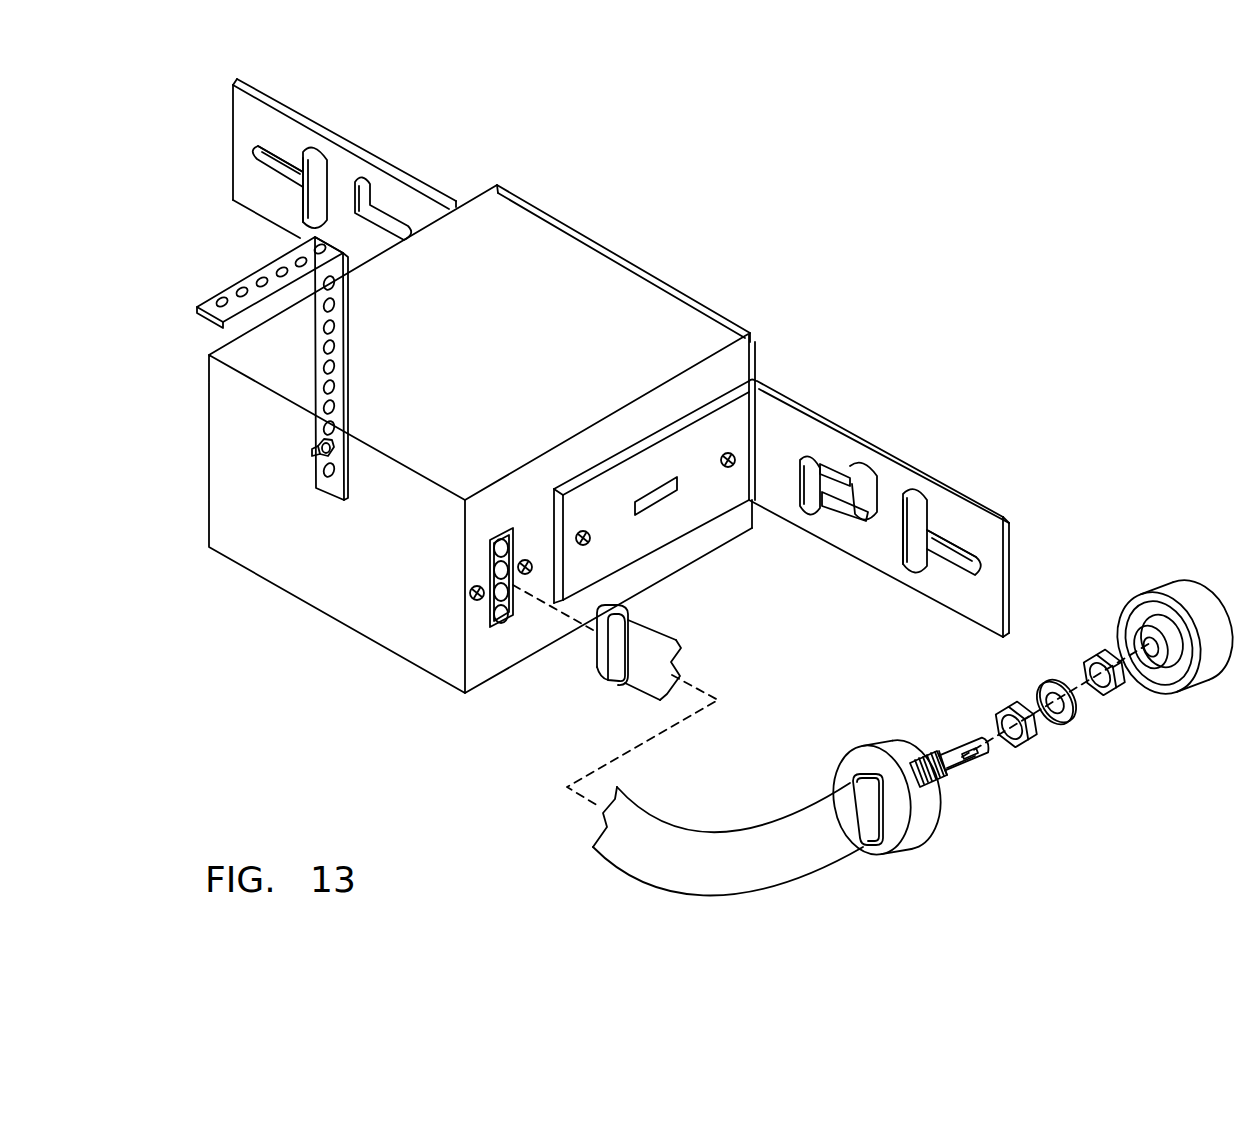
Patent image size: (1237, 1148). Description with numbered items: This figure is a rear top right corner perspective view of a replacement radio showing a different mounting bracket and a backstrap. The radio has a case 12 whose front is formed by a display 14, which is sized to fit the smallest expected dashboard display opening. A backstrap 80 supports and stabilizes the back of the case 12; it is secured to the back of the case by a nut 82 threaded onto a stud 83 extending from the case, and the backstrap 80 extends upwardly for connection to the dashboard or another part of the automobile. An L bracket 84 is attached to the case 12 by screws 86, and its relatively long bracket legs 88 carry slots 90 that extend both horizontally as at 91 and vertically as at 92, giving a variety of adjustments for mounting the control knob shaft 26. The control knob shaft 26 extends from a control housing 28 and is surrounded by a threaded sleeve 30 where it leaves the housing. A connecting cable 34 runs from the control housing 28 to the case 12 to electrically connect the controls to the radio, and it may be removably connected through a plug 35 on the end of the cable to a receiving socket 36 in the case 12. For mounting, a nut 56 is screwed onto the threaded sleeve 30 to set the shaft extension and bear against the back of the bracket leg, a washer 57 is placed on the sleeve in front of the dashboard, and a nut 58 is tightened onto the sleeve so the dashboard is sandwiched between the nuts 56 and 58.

The radio case 12 is at (357, 620).
The display 14 is at (635, 265).
The control knob shaft 26 is at (958, 772).
The control housing 28 is at (1160, 590).
The threaded sleeve 30 is at (967, 748).
The connecting cable 34 is at (648, 850).
The plug 35 is at (598, 667).
The receiving socket 36 is at (502, 606).
The nut 56 is at (1017, 753).
The washer 57 is at (1072, 723).
The nut 58 is at (1113, 700).
The backstrap 80 is at (346, 395).
The nut 82 is at (336, 462).
The stud 83 is at (318, 455).
The L bracket 84 is at (640, 440).
The screw 86 is at (590, 537).
The bracket leg 88 is at (400, 175).
The slot 90 is at (290, 180).
The horizontal slot portion 91 is at (278, 160).
The vertical slot portion 92 is at (318, 160).